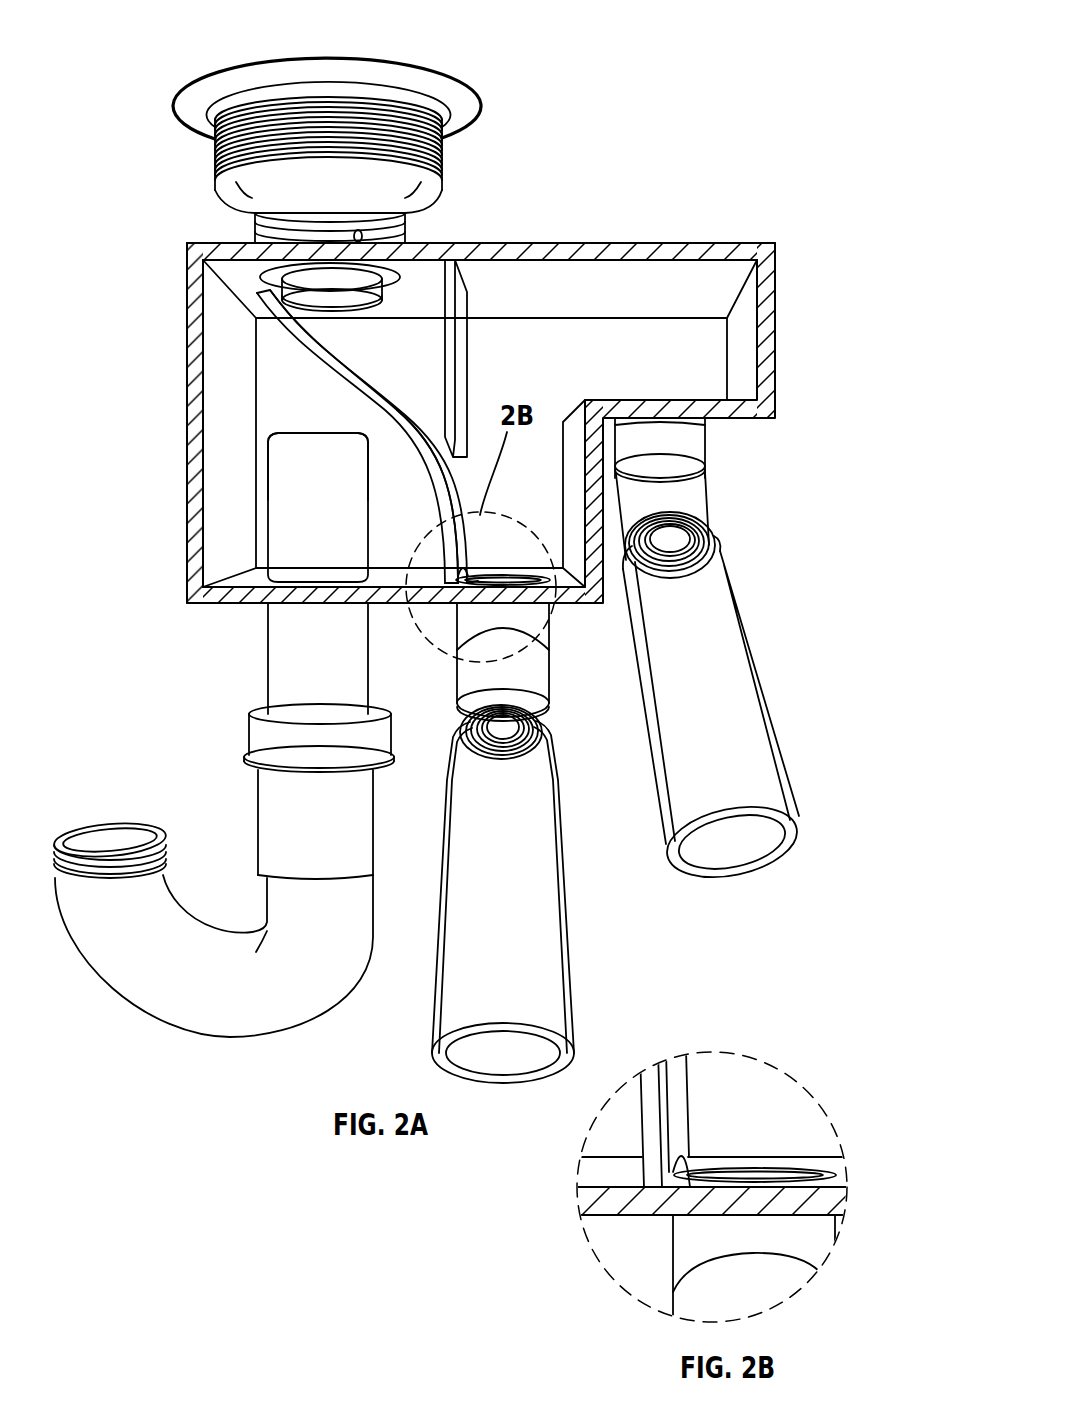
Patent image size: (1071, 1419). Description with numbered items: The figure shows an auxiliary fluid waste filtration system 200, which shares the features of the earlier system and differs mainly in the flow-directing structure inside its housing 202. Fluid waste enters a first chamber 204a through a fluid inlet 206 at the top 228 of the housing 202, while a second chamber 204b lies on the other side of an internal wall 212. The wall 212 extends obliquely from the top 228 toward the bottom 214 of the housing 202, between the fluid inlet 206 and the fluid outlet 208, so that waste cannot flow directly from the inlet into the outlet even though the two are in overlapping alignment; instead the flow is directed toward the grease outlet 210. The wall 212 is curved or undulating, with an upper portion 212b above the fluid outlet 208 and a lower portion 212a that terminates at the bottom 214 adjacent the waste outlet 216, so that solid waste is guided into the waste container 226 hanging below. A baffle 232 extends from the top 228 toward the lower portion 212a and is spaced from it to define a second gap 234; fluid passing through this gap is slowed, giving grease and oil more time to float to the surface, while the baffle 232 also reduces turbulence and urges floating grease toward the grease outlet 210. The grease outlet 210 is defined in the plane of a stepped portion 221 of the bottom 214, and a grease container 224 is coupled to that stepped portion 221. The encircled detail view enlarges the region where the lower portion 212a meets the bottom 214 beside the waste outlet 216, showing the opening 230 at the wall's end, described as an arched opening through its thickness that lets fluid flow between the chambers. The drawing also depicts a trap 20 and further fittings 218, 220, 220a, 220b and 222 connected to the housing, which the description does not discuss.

In FIG. 2A, the P-trap 20 is at (274, 823).
In FIG. 2A, the auxiliary fluid waste filtration system 200 is at (660, 112).
In FIG. 2A, the housing 202 is at (770, 320).
In FIG. 2A, the first chamber 204a is at (585, 340).
In FIG. 2A, the side wall 204b is at (205, 412).
In FIG. 2A, the fluid inlet 206 is at (292, 342).
In FIG. 2A, the fluid outlet 208 is at (300, 428).
In FIG. 2A, the grease outlet 210 is at (700, 400).
In FIG. 2A, the wall 212 is at (432, 300).
In FIG. 2A, the lower portion of the wall 212a is at (452, 567).
In FIG. 2B, the lower portion of the wall 212a is at (652, 1127).
In FIG. 2A, the upper portion of the wall 212b is at (288, 352).
In FIG. 2A, the bottom of the housing 214 is at (367, 607).
In FIG. 2B, the bottom of the housing 214 is at (795, 1197).
In FIG. 2A, the waste outlet 216 is at (503, 577).
In FIG. 2B, the waste outlet 216 is at (760, 1172).
In FIG. 2A, the drain flange 218 is at (303, 58).
In FIG. 2A, the standpipe 220 is at (268, 495).
In FIG. 2A, the standpipe upper portion 220a is at (268, 445).
In FIG. 2A, the coupling nut 220b is at (263, 740).
In FIG. 2A, the stepped portion 221 is at (747, 422).
In FIG. 2A, the coupling 222 is at (712, 508).
In FIG. 2A, the grease container 224 is at (757, 657).
In FIG. 2A, the waste container 226 is at (565, 958).
In FIG. 2A, the top of the housing 228 is at (690, 252).
In FIG. 2B, the hose end portion 230 is at (694, 1137).
In FIG. 2A, the baffle 232 is at (470, 268).
In FIG. 2A, the second gap 234 is at (445, 455).